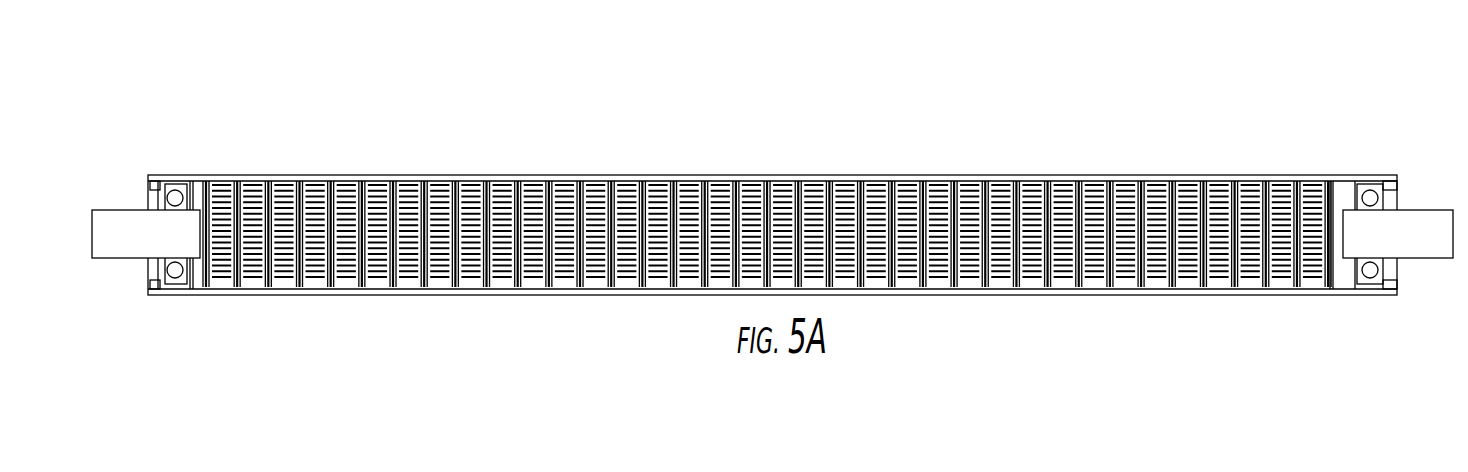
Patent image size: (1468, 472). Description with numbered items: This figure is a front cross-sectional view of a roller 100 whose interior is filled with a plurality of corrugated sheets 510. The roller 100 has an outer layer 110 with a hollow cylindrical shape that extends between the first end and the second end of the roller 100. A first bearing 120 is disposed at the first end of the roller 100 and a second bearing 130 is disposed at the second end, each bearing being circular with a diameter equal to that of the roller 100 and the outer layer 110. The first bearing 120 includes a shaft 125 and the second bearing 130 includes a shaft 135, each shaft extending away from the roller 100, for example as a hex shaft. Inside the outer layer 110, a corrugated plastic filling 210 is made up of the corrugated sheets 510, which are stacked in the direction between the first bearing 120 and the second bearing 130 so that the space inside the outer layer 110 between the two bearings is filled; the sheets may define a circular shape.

The roller 100 is at (322, 100).
The outer layer 110 is at (608, 175).
The first bearing 120 is at (175, 178).
The shaft 125 is at (113, 223).
The second bearing 130 is at (1390, 178).
The shaft 135 is at (1422, 225).
The corrugated plastic filling 210 is at (767, 196).
The corrugated sheets 510 is at (1142, 167).